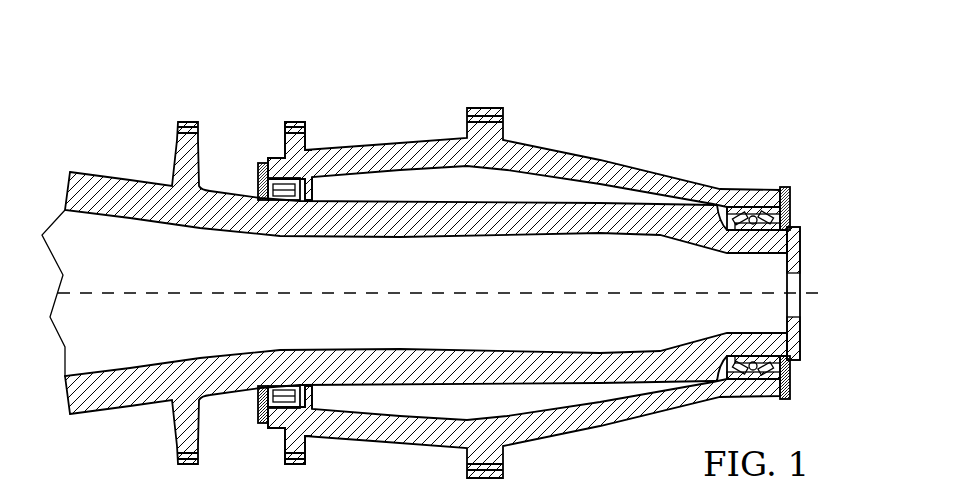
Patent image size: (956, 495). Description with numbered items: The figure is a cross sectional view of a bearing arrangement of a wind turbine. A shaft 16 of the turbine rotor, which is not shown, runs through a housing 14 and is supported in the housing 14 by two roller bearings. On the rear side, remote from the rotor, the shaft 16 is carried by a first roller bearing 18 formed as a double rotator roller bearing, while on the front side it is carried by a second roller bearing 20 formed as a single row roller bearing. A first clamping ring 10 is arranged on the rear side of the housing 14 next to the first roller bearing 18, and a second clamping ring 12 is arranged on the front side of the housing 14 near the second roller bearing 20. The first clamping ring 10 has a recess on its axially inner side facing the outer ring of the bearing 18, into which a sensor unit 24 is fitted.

The first clamping ring 10 is at (790, 187).
The second clamping ring 12 is at (250, 178).
The housing 14 is at (537, 148).
The shaft 16 is at (603, 207).
The first roller bearing 18 is at (760, 192).
The second roller bearing 20 is at (300, 190).
The sensor unit 24 is at (255, 183).